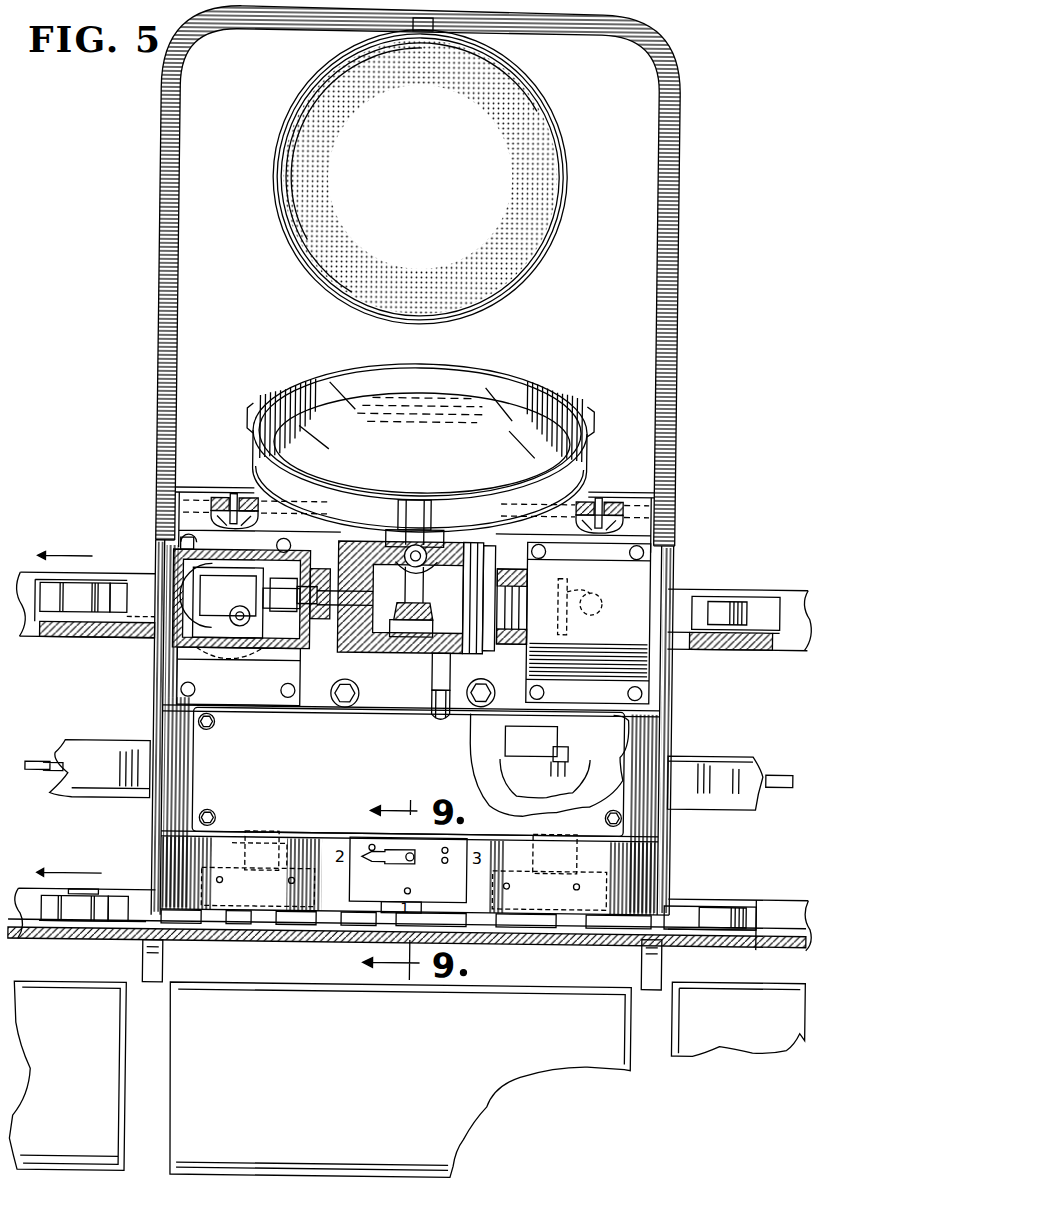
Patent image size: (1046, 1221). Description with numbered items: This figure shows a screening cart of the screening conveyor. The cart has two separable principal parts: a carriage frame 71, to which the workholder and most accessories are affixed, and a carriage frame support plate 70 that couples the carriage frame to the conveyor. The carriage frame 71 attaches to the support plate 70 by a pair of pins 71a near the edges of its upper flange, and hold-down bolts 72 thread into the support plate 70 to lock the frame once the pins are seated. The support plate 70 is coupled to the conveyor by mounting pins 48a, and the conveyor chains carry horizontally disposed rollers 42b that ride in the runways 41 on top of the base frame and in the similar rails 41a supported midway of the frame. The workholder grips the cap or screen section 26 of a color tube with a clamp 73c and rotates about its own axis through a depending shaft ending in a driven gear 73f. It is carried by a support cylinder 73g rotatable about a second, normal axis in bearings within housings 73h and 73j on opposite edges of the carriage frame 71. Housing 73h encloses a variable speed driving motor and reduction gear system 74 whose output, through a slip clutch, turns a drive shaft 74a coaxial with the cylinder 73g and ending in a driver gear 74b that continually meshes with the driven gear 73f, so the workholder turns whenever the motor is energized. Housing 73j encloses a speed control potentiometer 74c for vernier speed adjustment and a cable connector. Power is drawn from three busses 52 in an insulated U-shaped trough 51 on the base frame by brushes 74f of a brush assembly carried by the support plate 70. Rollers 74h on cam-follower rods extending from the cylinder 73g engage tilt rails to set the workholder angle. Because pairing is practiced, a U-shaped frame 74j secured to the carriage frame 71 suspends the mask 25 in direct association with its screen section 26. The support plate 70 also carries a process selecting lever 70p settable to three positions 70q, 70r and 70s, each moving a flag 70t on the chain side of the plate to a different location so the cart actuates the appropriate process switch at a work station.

The mask 25 is at (522, 131).
The screen section 26 is at (495, 384).
The U-shaped frame 74j is at (667, 322).
The pins 71a is at (232, 499).
The clamp 73c is at (411, 536).
The variable speed driving motor and reduction gear system 74 is at (195, 602).
The roller 42b is at (728, 599).
The speed control potentiometer 74c is at (583, 586).
The driven gear 73f is at (423, 618).
The runways 41 is at (742, 646).
The housing 73h is at (228, 642).
The carriage frame 71 is at (188, 666).
The drive shaft 74a is at (314, 641).
The driver gear 74b is at (393, 633).
The housing 73j is at (653, 660).
The carriage frame support plate 70 is at (161, 720).
The cylinder 73g is at (430, 668).
The busses 52 is at (28, 763).
The hold-down bolts 72 is at (305, 709).
The rollers 74h is at (438, 713).
The brushes 74f is at (552, 763).
The U-shaped trough 51 is at (97, 781).
The mounting pins 48a is at (260, 829).
The lever position 70q is at (375, 845).
The lever position 70s is at (453, 850).
The process selecting lever 70p is at (388, 862).
The lever position 70r is at (414, 894).
The rails 41a is at (781, 913).
The flag 70t is at (386, 910).